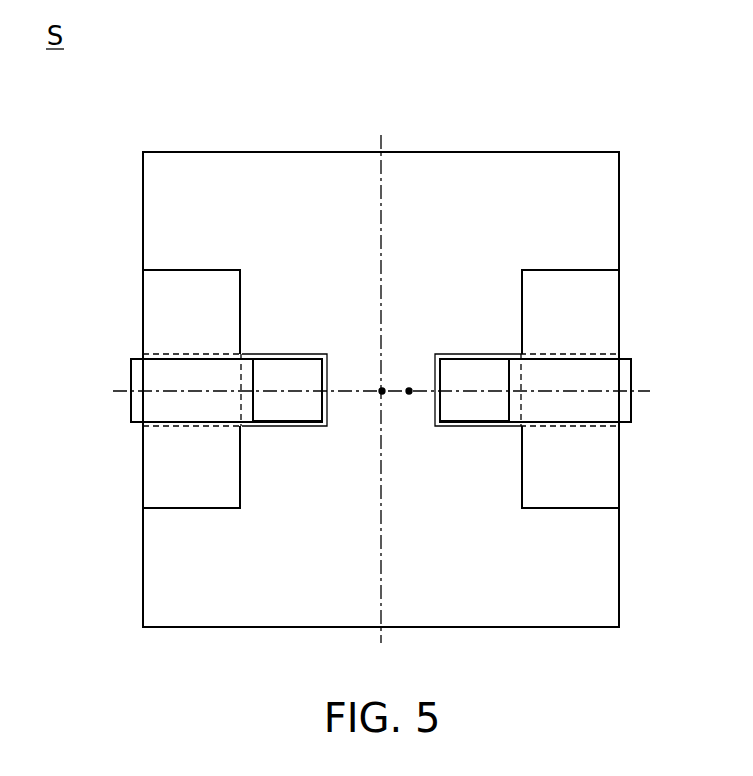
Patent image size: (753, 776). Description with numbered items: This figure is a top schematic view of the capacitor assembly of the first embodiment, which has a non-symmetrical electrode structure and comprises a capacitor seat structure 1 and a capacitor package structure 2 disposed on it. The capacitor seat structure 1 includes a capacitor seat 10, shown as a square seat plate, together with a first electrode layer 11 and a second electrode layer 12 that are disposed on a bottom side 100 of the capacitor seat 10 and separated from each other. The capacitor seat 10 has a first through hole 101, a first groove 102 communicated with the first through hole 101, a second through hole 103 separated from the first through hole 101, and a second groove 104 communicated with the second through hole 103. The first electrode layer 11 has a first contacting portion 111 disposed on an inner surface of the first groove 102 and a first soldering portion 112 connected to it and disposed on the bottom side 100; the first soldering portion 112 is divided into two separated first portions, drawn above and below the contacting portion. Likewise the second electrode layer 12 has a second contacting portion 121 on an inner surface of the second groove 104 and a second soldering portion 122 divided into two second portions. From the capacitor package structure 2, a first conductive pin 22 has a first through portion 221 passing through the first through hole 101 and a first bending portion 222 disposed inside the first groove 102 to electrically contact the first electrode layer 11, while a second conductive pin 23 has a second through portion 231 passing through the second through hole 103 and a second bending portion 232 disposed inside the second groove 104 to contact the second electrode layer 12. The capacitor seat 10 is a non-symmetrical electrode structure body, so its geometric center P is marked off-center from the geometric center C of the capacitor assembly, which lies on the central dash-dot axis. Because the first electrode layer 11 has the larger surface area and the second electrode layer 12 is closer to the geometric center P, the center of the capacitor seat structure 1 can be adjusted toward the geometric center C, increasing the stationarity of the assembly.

The capacitor seat structure 1 is at (622, 184).
The capacitor seat 10 is at (432, 150).
The bottom side 100 is at (350, 182).
The first through hole 101 is at (275, 352).
The first groove 102 is at (251, 402).
The second through hole 103 is at (487, 352).
The second groove 104 is at (510, 402).
The first electrode layer 11 is at (58, 323).
The first contacting portion 111 is at (172, 379).
The first soldering portion 112 is at (170, 323).
The second electrode layer 12 is at (704, 323).
The second contacting portion 121 is at (590, 379).
The second soldering portion 122 is at (592, 323).
The capacitor package structure 2 is at (325, 410).
The first conductive pin 22 is at (207, 418).
The first through portion 221 is at (305, 372).
The first bending portion 222 is at (203, 372).
The second conductive pin 23 is at (557, 418).
The second through portion 231 is at (457, 372).
The second bending portion 232 is at (559, 372).
The geometric center of the capacitor seat P is at (409, 386).
The geometric center of the capacitor assembly C is at (385, 393).